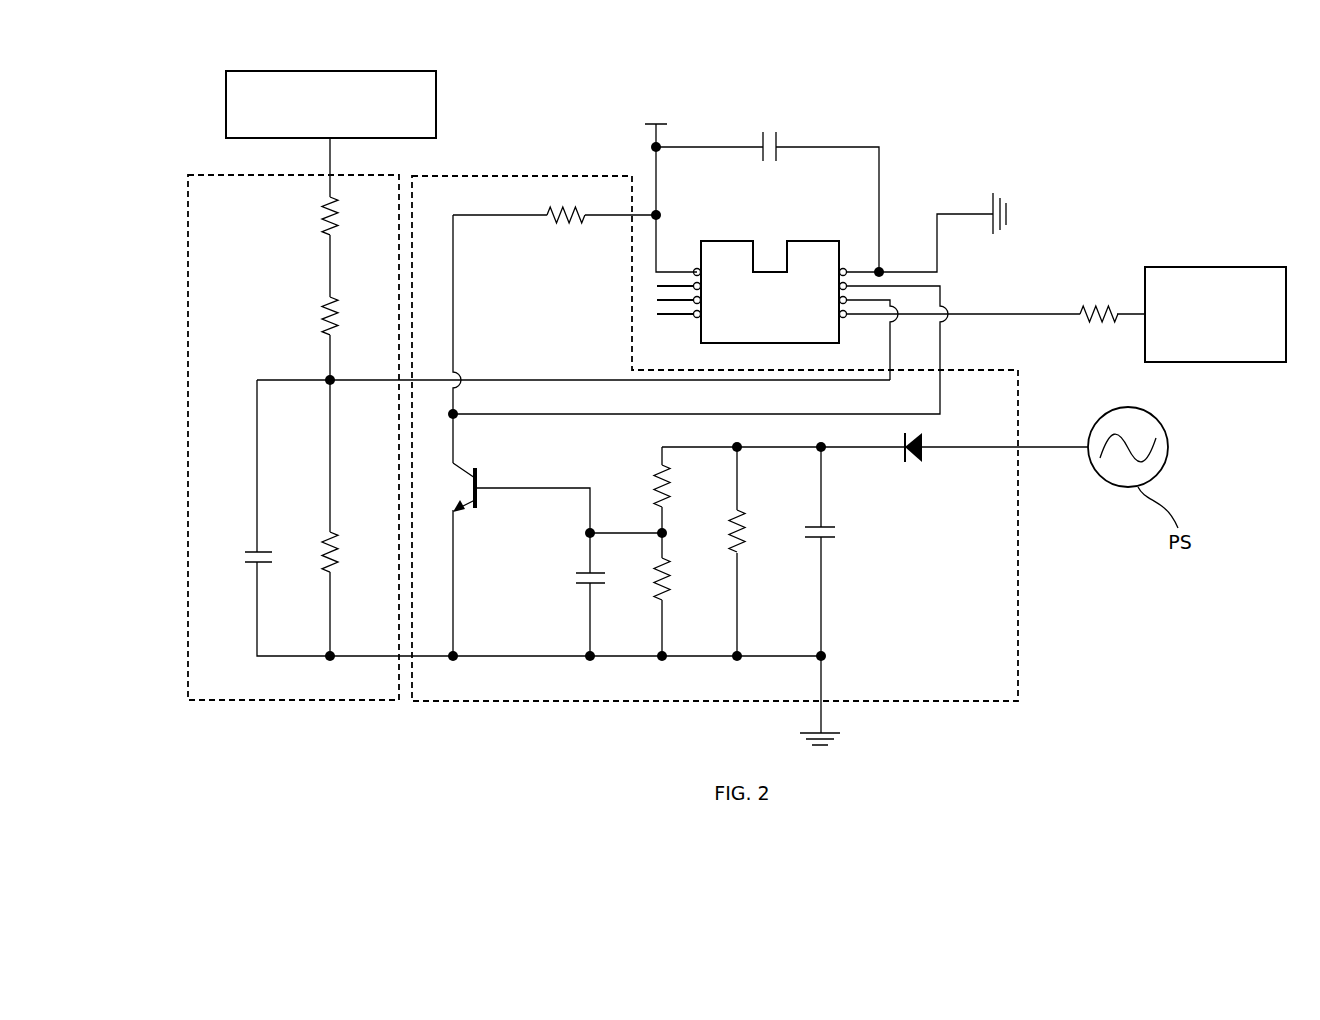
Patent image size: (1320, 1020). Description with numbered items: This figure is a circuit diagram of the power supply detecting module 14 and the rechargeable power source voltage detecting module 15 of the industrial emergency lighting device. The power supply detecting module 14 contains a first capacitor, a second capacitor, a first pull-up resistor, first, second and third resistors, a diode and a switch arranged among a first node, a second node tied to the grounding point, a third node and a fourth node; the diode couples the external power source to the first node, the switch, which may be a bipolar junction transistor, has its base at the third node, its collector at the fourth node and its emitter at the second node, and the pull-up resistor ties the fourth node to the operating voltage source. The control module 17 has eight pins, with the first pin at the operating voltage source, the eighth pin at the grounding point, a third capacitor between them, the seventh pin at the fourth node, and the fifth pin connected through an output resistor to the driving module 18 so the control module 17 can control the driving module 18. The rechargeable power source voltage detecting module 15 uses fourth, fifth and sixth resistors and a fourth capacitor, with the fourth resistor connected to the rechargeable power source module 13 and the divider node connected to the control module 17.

The rechargeable power source module 13 is at (226, 105).
The power supply detecting module 14 is at (778, 433).
The rechargeable power source voltage detecting module 15 is at (188, 212).
The control module 17 is at (812, 241).
The driving module 18 is at (1215, 267).